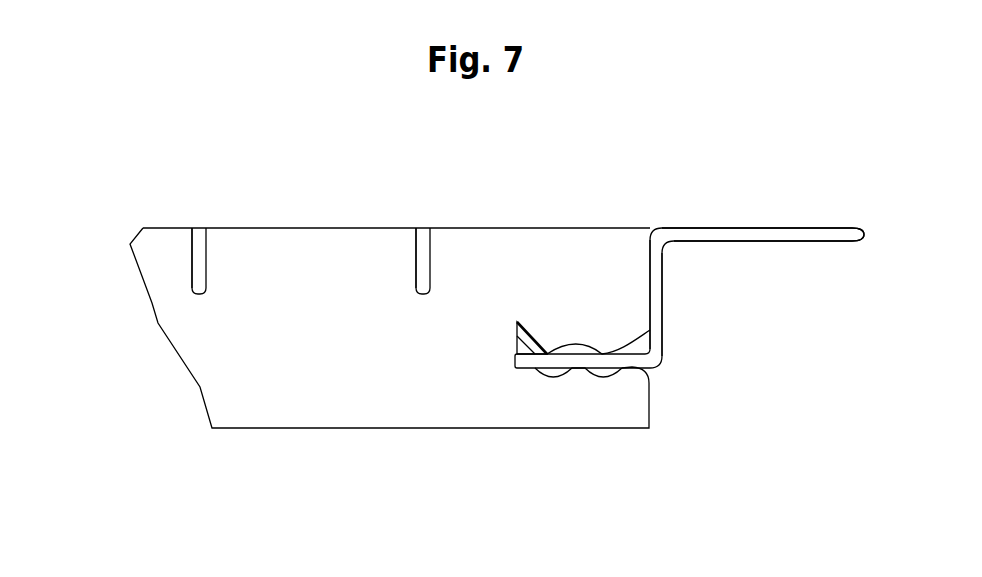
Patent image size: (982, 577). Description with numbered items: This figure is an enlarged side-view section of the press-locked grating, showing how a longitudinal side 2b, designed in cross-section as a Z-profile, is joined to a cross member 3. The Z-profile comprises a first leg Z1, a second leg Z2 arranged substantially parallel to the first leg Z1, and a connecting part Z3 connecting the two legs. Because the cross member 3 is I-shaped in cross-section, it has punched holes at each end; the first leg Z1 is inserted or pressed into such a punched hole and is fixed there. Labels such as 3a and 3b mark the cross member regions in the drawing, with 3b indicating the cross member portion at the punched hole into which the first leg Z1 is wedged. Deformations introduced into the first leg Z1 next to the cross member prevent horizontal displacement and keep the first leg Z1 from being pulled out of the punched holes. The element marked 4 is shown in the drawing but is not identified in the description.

The cross member 3 is at (140, 370).
The cross member 3a is at (192, 262).
The cross member 3b is at (538, 367).
The slot 4 is at (201, 242).
The longitudinal side 2b is at (701, 298).
The first leg Z1 is at (557, 362).
The second leg Z2 is at (810, 233).
The connecting part Z3 is at (707, 298).